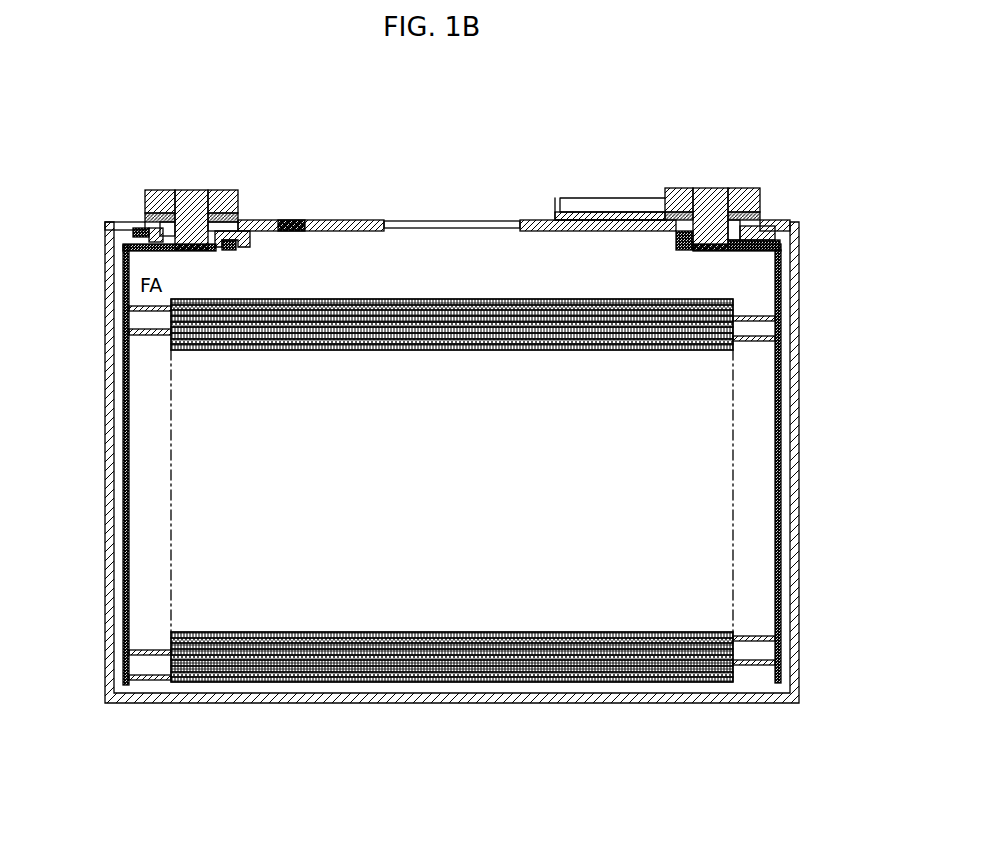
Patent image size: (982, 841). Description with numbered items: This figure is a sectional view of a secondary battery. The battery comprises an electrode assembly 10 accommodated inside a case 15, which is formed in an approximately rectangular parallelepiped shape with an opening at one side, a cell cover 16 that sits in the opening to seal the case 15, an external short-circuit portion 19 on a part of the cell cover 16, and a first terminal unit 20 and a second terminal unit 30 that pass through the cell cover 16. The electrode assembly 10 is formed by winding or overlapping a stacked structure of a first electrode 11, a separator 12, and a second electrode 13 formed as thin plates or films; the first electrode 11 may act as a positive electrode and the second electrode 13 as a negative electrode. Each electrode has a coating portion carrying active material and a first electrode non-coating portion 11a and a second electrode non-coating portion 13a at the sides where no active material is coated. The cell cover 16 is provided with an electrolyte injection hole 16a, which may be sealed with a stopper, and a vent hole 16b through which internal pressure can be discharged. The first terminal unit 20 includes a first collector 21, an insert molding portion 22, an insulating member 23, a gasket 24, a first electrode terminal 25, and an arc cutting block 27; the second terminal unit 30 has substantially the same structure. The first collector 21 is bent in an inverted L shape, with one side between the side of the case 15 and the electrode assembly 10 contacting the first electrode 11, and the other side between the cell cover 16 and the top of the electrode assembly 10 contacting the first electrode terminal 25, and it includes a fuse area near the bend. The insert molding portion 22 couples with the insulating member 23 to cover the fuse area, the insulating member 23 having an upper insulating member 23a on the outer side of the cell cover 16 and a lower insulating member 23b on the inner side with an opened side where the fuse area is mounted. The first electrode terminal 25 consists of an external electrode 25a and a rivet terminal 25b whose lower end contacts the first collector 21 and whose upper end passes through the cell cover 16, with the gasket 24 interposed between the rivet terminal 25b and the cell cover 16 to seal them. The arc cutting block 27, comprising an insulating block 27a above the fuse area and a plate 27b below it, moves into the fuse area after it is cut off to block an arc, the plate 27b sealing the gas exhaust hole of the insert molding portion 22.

The electrode assembly 10 is at (396, 549).
The first electrode 11 is at (428, 683).
The first electrode non-coating portion 11a is at (152, 683).
The separator 12 is at (478, 683).
The second electrode 13 is at (420, 765).
The second electrode non-coating portion 13a is at (745, 666).
The case 15 is at (105, 553).
The cell cover 16 is at (118, 226).
The electrolyte injection hole 16a is at (300, 221).
The vent hole 16b is at (445, 221).
The external short-circuit portion 19 is at (590, 198).
The first terminal unit 20 is at (187, 168).
The first collector 21 is at (135, 326).
The insert molding portion 22 is at (126, 246).
The insulating member 23 is at (264, 182).
The upper insulating member 23a is at (235, 231).
The lower insulating member 23b is at (233, 245).
The gasket 24 is at (220, 190).
The first electrode terminal 25 is at (170, 168).
The external electrode 25a is at (162, 190).
The rivet terminal 25b is at (190, 190).
The arc cutting block 27 is at (121, 187).
The insulating block 27a is at (140, 230).
The plate 27b is at (155, 230).
The second terminal unit 30 is at (705, 180).